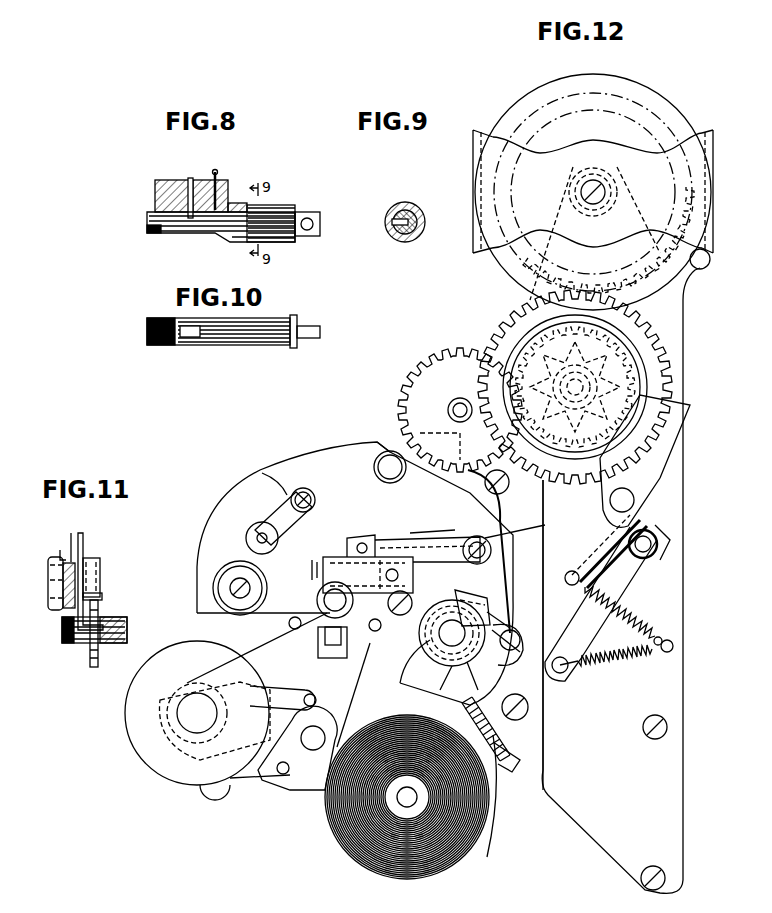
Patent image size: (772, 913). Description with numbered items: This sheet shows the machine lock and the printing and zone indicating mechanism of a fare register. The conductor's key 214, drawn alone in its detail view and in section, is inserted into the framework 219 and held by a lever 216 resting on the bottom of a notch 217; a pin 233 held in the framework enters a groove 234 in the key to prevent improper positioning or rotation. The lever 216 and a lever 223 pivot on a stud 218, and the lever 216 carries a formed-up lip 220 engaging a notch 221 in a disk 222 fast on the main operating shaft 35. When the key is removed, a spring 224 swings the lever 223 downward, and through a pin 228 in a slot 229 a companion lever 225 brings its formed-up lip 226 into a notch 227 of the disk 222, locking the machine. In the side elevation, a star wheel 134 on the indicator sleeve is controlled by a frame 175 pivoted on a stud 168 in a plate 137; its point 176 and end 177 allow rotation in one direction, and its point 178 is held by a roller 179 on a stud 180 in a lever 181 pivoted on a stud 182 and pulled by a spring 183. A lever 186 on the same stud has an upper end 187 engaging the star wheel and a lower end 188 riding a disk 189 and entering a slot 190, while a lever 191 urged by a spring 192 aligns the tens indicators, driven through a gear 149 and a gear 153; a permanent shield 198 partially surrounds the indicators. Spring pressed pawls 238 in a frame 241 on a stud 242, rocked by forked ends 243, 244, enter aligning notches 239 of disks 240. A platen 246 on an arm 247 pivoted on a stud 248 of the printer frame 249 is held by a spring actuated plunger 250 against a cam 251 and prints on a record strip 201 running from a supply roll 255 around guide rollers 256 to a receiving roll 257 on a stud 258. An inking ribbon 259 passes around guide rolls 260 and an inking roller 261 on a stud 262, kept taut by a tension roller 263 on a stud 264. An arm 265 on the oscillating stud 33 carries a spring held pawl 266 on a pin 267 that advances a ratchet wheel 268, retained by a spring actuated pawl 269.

In FIG. 12, the oscillating stud 33 is at (308, 750).
In FIG. 11, the main operating shaft 35 is at (128, 630).
In FIG. 12, the main operating shaft 35 is at (435, 636).
In FIG. 12, the star wheel 134 is at (572, 365).
In FIG. 12, the plate 137 is at (683, 762).
In FIG. 12, the gear 149 is at (672, 372).
In FIG. 12, the gear 153 is at (418, 402).
In FIG. 12, the stud 168 is at (635, 508).
In FIG. 12, the frame 175 is at (635, 500).
In FIG. 12, the point of frame 176 is at (558, 635).
In FIG. 12, the end of frame 177 is at (680, 406).
In FIG. 12, the point 178 is at (662, 556).
In FIG. 12, the roller 179 is at (652, 543).
In FIG. 12, the stud 180 is at (657, 548).
In FIG. 12, the lever 181 is at (628, 572).
In FIG. 12, the stud 182 is at (612, 604).
In FIG. 12, the spring 183 is at (606, 664).
In FIG. 12, the lever 186 is at (565, 578).
In FIG. 12, the upper end of lever 187 is at (606, 375).
In FIG. 12, the lower end of lever 188 is at (491, 733).
In FIG. 12, the disk 189 is at (440, 655).
In FIG. 12, the slot 190 is at (452, 666).
In FIG. 12, the lever 191 is at (577, 572).
In FIG. 12, the spring 192 is at (672, 640).
In FIG. 12, the permanent shield 198 is at (705, 145).
In FIG. 12, the record strip 201 is at (238, 642).
In FIG. 8, the conductor's key 214 is at (307, 212).
In FIG. 9, the conductor's key 214 is at (407, 242).
In FIG. 10, the conductor's key 214 is at (238, 346).
In FIG. 8, the lever 216 is at (188, 188).
In FIG. 12, the lever 216 is at (317, 601).
In FIG. 8, the notch 217 is at (155, 192).
In FIG. 11, the stud 218 is at (100, 576).
In FIG. 12, the stud 218 is at (387, 577).
In FIG. 8, the framework 219 is at (193, 180).
In FIG. 11, the framework 219 is at (62, 600).
In FIG. 12, the framework 219 is at (322, 618).
In FIG. 11, the formed-up lip 220 is at (102, 597).
In FIG. 12, the formed-up lip 220 is at (490, 600).
In FIG. 12, the notch 221 is at (492, 614).
In FIG. 11, the disk 222 is at (112, 618).
In FIG. 12, the disk 222 is at (565, 646).
In FIG. 8, the lever 223 is at (217, 174).
In FIG. 11, the lever 223 is at (61, 553).
In FIG. 12, the lever 223 is at (312, 566).
In FIG. 12, the spring 224 is at (390, 572).
In FIG. 11, the companion lever 225 is at (84, 548).
In FIG. 12, the companion lever 225 is at (470, 537).
In FIG. 11, the formed-up lip 226 is at (90, 648).
In FIG. 12, the formed-up lip 226 is at (500, 632).
In FIG. 12, the notch 227 is at (508, 652).
In FIG. 11, the pin 228 is at (71, 533).
In FIG. 12, the pin 228 is at (472, 533).
In FIG. 12, the slot 229 is at (458, 543).
In FIG. 8, the pin 233 is at (258, 222).
In FIG. 9, the pin 233 is at (392, 220).
In FIG. 8, the groove 234 is at (150, 225).
In FIG. 9, the groove 234 is at (411, 210).
In FIG. 12, the spring pressed pawls 238 is at (380, 565).
In FIG. 12, the aligning notches 239 is at (302, 490).
In FIG. 12, the disks 240 is at (272, 524).
In FIG. 12, the frame 241 is at (462, 533).
In FIG. 12, the stud 242 is at (490, 550).
In FIG. 12, the forked end 243 is at (402, 614).
In FIG. 12, the forked end 244 is at (504, 644).
In FIG. 12, the platen 246 is at (325, 647).
In FIG. 12, the arm 247 is at (346, 660).
In FIG. 12, the stud 248 is at (556, 672).
In FIG. 12, the printer frame 249 is at (520, 722).
In FIG. 12, the spring actuated plunger 250 is at (488, 850).
In FIG. 12, the cam 251 is at (450, 668).
In FIG. 12, the supply roll 255 is at (362, 858).
In FIG. 12, the guide rollers 256 is at (289, 623).
In FIG. 12, the receiving roll 257 is at (190, 716).
In FIG. 12, the stud 258 is at (168, 735).
In FIG. 12, the inking ribbon 259 is at (385, 455).
In FIG. 12, the guide rolls 260 is at (378, 445).
In FIG. 12, the inking roller 261 is at (232, 584).
In FIG. 12, the stud 262 is at (222, 572).
In FIG. 12, the tension roller 263 is at (246, 538).
In FIG. 12, the stud 264 is at (259, 477).
In FIG. 12, the arm 265 is at (305, 800).
In FIG. 12, the spring held pawl 266 is at (185, 768).
In FIG. 12, the pin 267 is at (279, 773).
In FIG. 12, the ratchet wheel 268 is at (178, 710).
In FIG. 12, the spring actuated pawl 269 is at (280, 706).